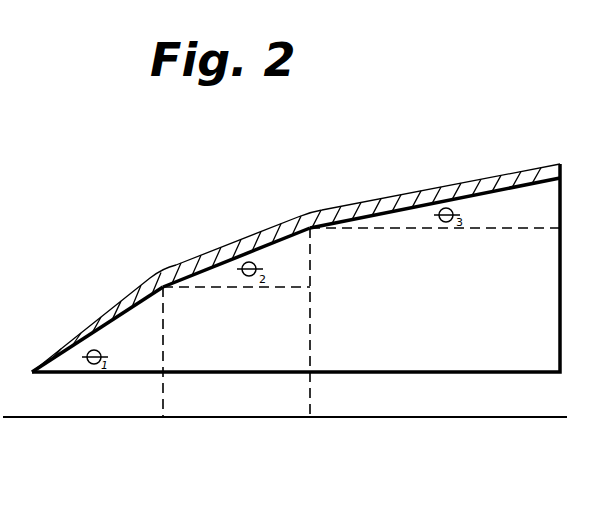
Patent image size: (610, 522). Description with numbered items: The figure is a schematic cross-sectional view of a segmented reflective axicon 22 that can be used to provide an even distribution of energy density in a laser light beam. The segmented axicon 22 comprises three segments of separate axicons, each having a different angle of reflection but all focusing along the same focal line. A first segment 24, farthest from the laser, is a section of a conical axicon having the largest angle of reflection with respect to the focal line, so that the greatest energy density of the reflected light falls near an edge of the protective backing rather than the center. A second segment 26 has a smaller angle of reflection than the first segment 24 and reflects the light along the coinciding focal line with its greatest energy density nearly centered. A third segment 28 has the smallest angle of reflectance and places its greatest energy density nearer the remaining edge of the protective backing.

The segmented axicon 22 is at (346, 206).
The first segment 24 is at (83, 330).
The second segment 26 is at (242, 240).
The third segment 28 is at (453, 184).